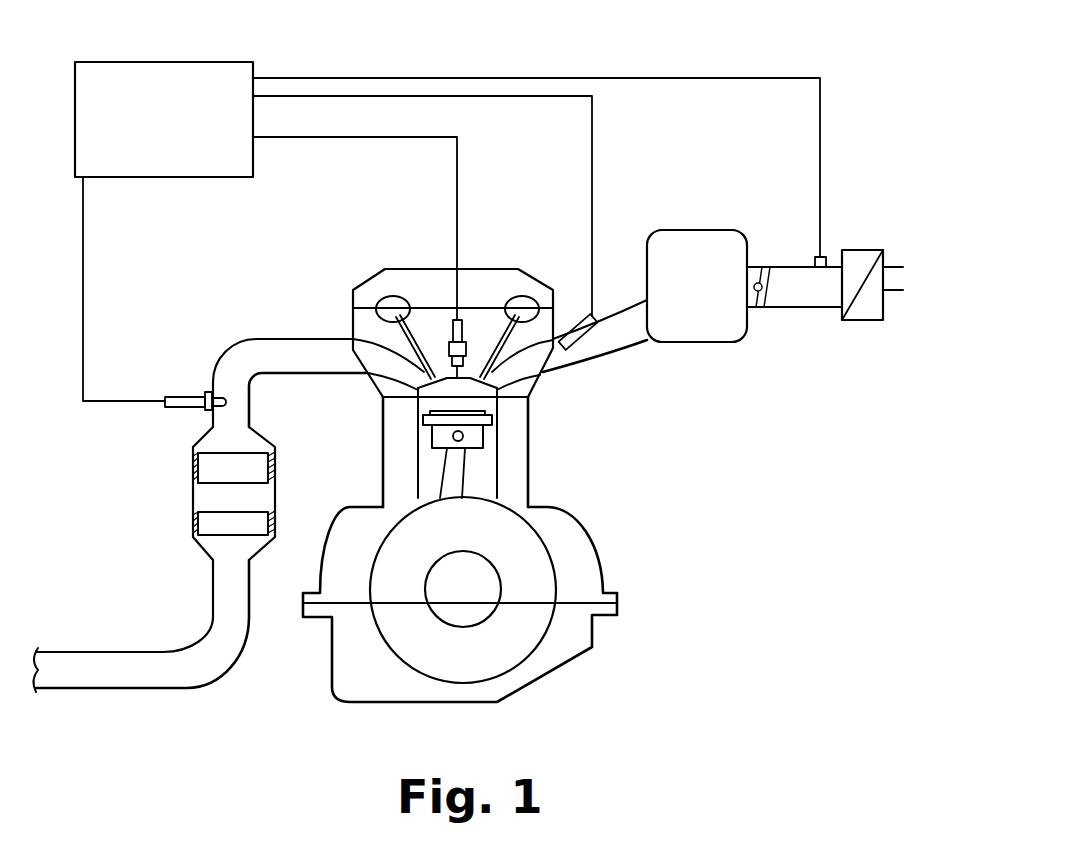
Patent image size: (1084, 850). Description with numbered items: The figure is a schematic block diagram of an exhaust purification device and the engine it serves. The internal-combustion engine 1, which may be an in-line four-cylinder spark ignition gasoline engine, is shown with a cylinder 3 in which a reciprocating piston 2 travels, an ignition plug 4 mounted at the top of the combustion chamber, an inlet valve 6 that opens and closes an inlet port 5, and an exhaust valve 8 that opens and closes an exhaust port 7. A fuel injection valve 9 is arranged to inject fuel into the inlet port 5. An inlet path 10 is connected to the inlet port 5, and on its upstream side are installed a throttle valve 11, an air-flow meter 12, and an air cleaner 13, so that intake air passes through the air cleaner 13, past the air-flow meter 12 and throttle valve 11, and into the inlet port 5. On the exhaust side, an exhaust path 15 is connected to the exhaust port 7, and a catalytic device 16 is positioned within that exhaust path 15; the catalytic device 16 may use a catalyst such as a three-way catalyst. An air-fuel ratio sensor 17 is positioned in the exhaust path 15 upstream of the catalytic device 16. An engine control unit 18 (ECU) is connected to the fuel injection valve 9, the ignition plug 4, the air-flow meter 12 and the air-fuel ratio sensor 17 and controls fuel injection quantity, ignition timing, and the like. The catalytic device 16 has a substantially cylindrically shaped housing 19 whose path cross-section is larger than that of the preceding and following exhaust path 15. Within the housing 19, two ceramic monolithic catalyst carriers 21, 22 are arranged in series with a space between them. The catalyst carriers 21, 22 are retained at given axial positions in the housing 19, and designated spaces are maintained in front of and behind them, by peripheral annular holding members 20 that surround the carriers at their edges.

The internal-combustion engine 1 is at (633, 567).
The piston 2 is at (482, 432).
The cylinder 3 is at (492, 475).
The ignition plug 4 is at (450, 340).
The inlet port 5 is at (543, 372).
The inlet valve 6 is at (487, 352).
The exhaust port 7 is at (384, 367).
The exhaust valve 8 is at (355, 314).
The fuel injection valve 9 is at (574, 317).
The inlet path 10 is at (627, 323).
The throttle valve 11 is at (760, 298).
The air-flow meter 12 is at (815, 258).
The air cleaner 13 is at (857, 252).
The exhaust path 15 is at (256, 342).
The catalytic device 16 is at (188, 546).
The air-fuel ratio sensor 17 is at (187, 395).
The engine control unit 18 is at (160, 62).
The housing 19 is at (278, 493).
The peripheral annular holding members 20 is at (192, 468).
The catalyst carrier 21 is at (218, 463).
The catalyst carrier 22 is at (247, 535).